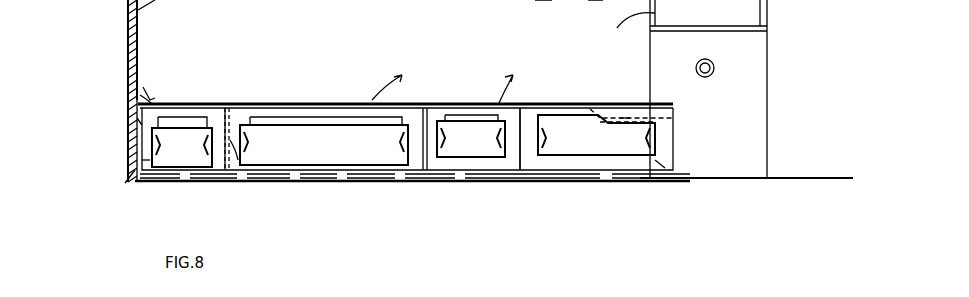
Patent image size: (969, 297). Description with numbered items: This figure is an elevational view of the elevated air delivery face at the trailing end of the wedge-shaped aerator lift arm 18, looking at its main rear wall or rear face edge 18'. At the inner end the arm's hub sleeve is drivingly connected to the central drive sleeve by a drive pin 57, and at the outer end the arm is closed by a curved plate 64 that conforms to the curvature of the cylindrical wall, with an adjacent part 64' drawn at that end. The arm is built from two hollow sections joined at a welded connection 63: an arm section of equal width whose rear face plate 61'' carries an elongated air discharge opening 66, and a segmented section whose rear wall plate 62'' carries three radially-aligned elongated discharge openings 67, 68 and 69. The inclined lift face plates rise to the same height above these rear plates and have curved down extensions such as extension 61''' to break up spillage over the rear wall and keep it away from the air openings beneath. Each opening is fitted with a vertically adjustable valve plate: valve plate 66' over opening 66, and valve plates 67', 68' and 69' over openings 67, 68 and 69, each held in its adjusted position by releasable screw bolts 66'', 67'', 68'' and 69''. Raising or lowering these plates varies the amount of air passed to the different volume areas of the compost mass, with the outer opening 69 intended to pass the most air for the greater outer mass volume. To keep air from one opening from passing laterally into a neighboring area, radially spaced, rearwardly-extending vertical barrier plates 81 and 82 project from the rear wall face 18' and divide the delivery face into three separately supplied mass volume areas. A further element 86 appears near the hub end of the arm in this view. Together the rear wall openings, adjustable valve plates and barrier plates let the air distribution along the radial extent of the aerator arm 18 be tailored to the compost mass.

The aerator lift arm 18 is at (290, 82).
The rear face edge 18' is at (736, 89).
The drive pin 57 is at (708, 70).
The rear face plate 61'' is at (677, 193).
The curved down extension 61''' is at (632, 172).
The rear wall plate 62'' is at (251, 188).
The welded connection 63 is at (520, 113).
The curved plate 64 is at (110, 141).
The wall bracket clip 64' is at (126, 68).
The air discharge opening 66 is at (605, 109).
The valve plate 66' is at (608, 179).
The releasable screw bolts 66'' is at (533, 173).
The discharge opening 67 is at (475, 108).
The valve plate 67' is at (457, 196).
The releasable screw bolts 67'' is at (483, 179).
The discharge opening 68 is at (324, 105).
The valve plate 68' is at (375, 182).
The releasable screw bolts 68'' is at (288, 183).
The discharge opening 69 is at (182, 116).
The valve plate 69' is at (308, 130).
The releasable screw bolts 69'' is at (125, 179).
The vertical barrier plate 81 is at (427, 100).
The vertical barrier plate 82 is at (230, 108).
The cabinet top connection 86 is at (630, 28).